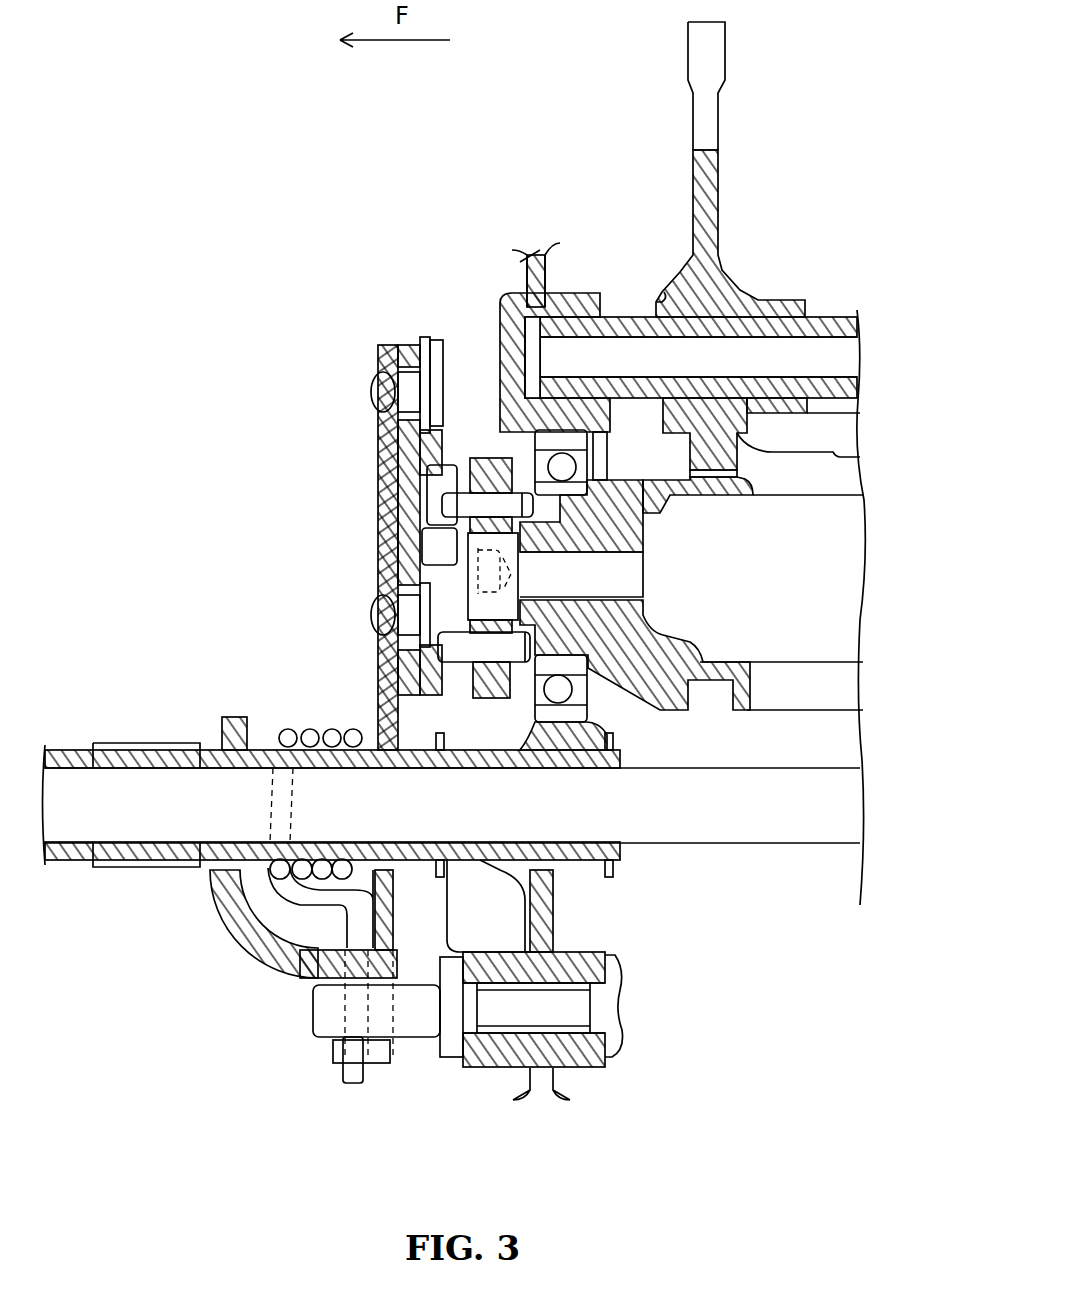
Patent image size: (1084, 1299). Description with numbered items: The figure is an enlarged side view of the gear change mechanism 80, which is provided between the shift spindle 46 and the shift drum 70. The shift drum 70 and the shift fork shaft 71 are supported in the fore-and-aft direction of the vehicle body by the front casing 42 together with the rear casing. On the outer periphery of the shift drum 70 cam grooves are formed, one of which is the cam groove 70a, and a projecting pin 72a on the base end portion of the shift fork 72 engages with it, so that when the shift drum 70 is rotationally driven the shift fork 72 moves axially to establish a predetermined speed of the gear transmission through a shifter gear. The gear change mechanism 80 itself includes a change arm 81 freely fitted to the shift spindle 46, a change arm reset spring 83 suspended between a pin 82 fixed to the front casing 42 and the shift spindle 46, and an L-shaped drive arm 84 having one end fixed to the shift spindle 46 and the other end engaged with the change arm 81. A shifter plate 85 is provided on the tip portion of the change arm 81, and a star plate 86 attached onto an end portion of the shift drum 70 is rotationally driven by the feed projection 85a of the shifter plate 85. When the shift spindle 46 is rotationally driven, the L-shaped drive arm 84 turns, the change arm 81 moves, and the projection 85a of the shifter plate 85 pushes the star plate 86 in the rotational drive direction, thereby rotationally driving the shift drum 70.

The gear change mechanism 80 is at (315, 462).
The change arm 81 is at (385, 553).
The pin 82 is at (417, 1020).
The change arm reset spring 83 is at (310, 898).
The L-shaped drive arm 84 is at (300, 960).
The shifter plate 85 is at (410, 513).
The feed projection 85a is at (405, 470).
The star plate 86 is at (493, 473).
The front casing 42 is at (540, 255).
The shift spindle 46 is at (818, 800).
The shift drum 70 is at (830, 677).
The cam groove 70a is at (720, 495).
The shift fork shaft 71 is at (845, 328).
The shift fork 72 is at (712, 172).
The projecting pin 72a is at (712, 453).